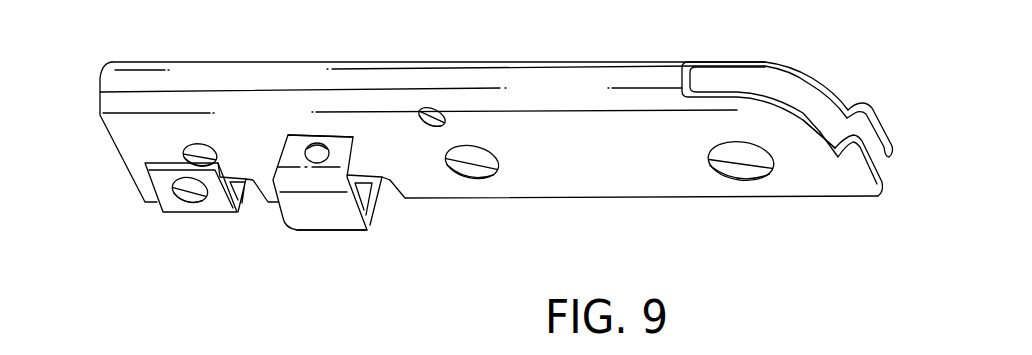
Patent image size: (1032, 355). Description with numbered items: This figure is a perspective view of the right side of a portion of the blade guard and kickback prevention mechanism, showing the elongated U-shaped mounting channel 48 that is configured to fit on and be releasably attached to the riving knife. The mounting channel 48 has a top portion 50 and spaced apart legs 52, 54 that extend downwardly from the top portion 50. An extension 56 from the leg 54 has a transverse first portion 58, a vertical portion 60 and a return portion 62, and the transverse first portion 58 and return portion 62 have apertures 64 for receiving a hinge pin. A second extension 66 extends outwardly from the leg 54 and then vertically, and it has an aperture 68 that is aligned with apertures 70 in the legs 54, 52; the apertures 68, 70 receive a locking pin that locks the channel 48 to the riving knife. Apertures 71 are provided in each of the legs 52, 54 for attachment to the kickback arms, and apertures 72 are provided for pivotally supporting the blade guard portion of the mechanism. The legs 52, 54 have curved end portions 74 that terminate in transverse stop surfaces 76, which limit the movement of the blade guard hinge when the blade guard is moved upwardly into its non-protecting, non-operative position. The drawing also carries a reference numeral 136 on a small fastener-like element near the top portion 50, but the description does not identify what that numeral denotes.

The mounting channel 48 is at (100, 98).
The top portion 50 is at (547, 78).
The leg 52 is at (758, 88).
The leg 54 is at (610, 162).
The extension 56 is at (367, 230).
The transverse first portion 58 is at (368, 197).
The vertical portion 60 is at (308, 210).
The return portion 62 is at (291, 147).
The aperture 64 is at (318, 160).
The second extension 66 is at (178, 208).
The aperture 68 is at (200, 200).
The aperture 70 is at (200, 152).
The aperture 71 is at (482, 177).
The aperture 72 is at (742, 173).
The curved end portion 74 is at (807, 128).
The transverse stop surface 76 is at (875, 128).
The rivet 136 is at (430, 111).